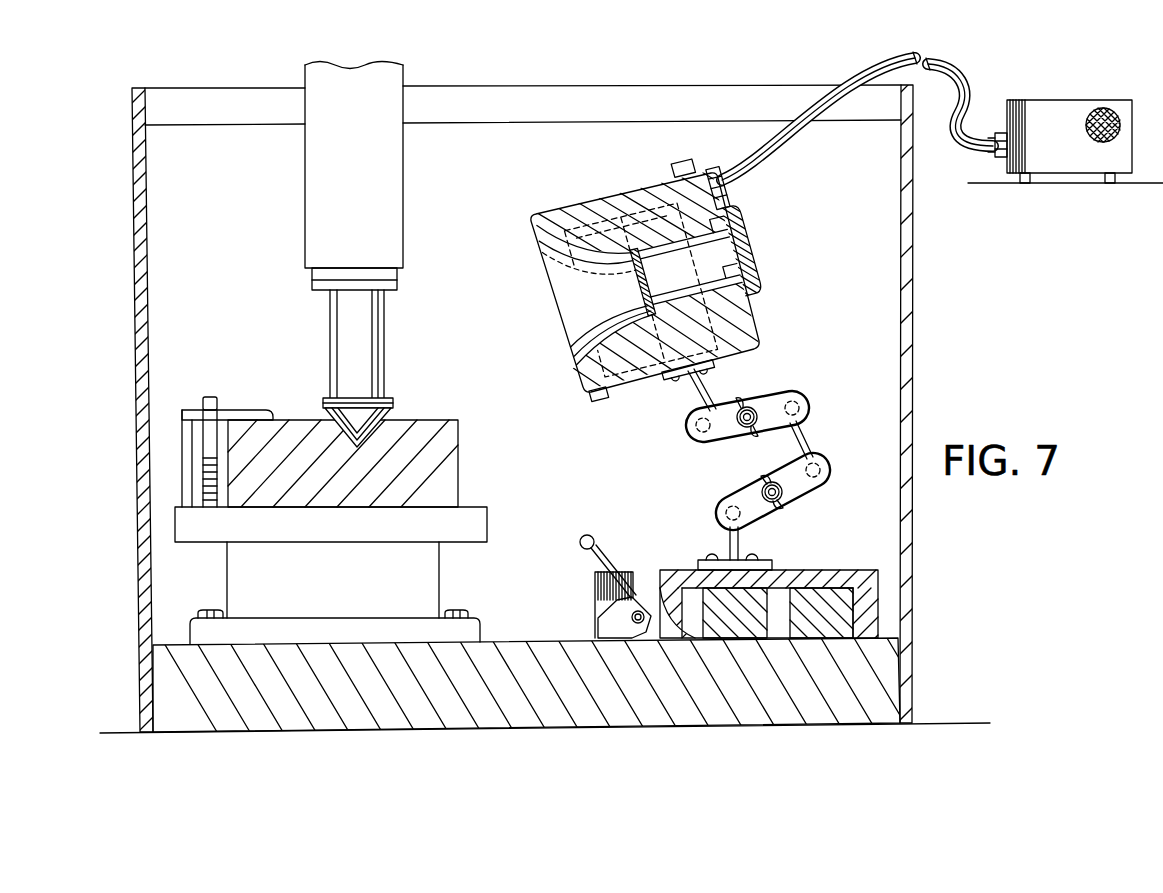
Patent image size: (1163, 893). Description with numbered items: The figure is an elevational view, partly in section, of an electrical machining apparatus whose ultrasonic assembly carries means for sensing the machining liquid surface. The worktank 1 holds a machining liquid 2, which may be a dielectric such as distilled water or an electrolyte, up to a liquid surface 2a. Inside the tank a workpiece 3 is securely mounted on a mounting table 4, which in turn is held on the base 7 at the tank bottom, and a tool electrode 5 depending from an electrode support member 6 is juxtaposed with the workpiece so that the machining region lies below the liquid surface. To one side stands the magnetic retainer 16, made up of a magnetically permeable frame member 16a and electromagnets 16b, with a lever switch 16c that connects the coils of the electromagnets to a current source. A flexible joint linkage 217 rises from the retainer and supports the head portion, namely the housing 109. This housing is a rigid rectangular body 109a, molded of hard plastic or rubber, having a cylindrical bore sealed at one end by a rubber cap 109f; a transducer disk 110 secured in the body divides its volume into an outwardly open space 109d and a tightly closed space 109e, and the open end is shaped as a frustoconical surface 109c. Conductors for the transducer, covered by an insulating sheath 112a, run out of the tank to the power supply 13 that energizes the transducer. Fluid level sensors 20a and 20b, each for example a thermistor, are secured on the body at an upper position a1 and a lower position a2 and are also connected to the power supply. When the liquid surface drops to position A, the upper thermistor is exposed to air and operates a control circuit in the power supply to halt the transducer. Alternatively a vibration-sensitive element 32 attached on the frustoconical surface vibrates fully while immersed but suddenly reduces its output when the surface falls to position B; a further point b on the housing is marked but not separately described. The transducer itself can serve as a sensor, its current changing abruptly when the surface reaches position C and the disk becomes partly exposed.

The worktank 1 is at (132, 181).
The machining liquid 2 is at (160, 241).
The liquid surface 2a is at (512, 123).
The workpiece 3 is at (430, 425).
The mounting table 4 is at (228, 580).
The tool electrode 5 is at (327, 402).
The electrode support member 6 is at (312, 184).
The base 7 is at (502, 657).
The power supply 13 is at (1078, 105).
The magnetic retainer 16 is at (736, 597).
The magnetically permeable frame member 16a is at (863, 581).
The electromagnets 16b is at (800, 598).
The lever switch 16c is at (630, 579).
The fluid level sensor 20a is at (682, 161).
The fluid level sensor 20b is at (610, 405).
The vibration-sensitive element 32 is at (530, 270).
The housing 109 is at (662, 306).
The rigid rectangular body 109a is at (750, 320).
The frustoconical surface 109c is at (583, 277).
The outwardly open space 109d is at (575, 355).
The tightly closed space 109e is at (745, 257).
The rubber cap 109f is at (742, 223).
The transducer disk 110 is at (580, 329).
The insulating sheath 112a is at (848, 72).
The flexible joint linkage 217 is at (820, 442).
The position A is at (670, 172).
The position B is at (540, 253).
The position C is at (560, 267).
The point b is at (518, 242).
The upper position a1 is at (654, 170).
The lower position a2 is at (606, 414).